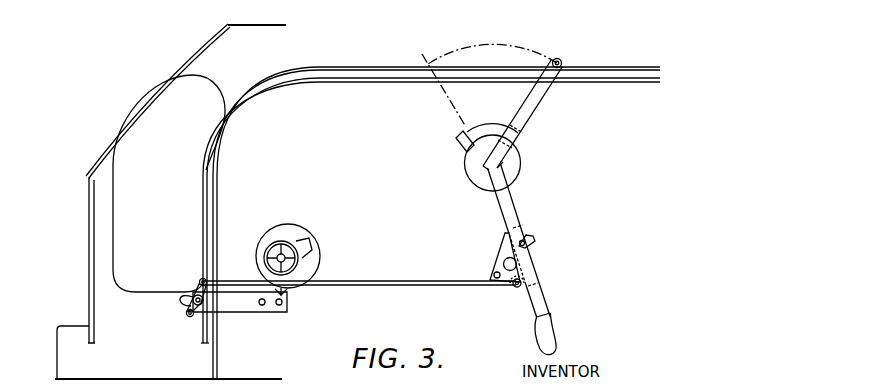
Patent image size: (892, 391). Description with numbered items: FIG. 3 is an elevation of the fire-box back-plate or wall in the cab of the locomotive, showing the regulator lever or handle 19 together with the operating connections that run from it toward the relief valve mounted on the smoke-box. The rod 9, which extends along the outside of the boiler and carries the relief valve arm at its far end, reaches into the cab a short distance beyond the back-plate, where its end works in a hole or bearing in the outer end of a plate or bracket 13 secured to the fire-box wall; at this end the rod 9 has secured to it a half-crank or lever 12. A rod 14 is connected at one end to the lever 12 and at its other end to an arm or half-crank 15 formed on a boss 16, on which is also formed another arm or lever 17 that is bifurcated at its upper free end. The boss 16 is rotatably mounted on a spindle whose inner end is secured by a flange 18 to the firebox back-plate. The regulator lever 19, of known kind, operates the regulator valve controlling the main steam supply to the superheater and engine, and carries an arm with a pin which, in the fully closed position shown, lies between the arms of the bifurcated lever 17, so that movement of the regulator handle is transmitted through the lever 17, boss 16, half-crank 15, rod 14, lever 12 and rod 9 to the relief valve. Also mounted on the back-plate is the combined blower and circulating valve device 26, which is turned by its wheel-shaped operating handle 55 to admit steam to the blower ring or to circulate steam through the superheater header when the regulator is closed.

The rod 9 is at (196, 318).
The half-crank or lever 12 is at (197, 288).
The plate or bracket 13 is at (247, 308).
The rod 14 is at (378, 282).
The arm or half-crank 15 is at (517, 291).
The boss 16 is at (504, 264).
The arm or lever 17 is at (533, 240).
The flange 18 is at (502, 256).
The regulator lever or handle 19 is at (523, 195).
The combined blower and circulating valve device 26 is at (287, 229).
The operating handle 55 is at (300, 267).